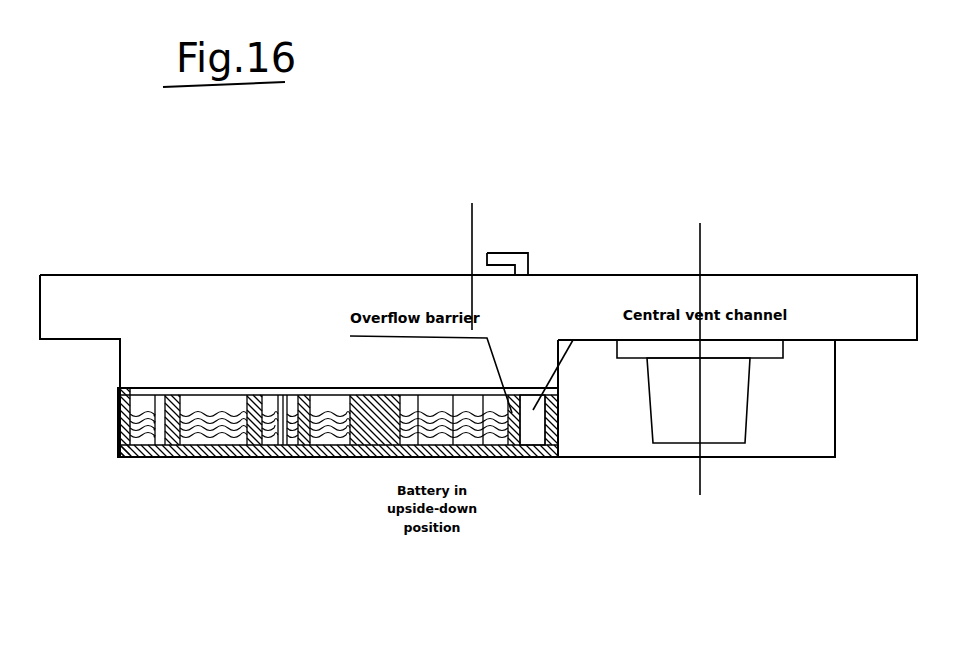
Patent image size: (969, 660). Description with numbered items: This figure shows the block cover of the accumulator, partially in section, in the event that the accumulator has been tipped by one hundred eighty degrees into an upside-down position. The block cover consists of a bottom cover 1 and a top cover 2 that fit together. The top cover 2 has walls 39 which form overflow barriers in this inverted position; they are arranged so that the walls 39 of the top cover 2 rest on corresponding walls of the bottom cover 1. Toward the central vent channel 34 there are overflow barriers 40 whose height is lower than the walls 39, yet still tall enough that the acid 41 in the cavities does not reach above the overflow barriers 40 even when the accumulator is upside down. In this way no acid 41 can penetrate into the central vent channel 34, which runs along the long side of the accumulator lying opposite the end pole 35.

The bottom cover 1 is at (190, 290).
The top cover 2 is at (250, 450).
The central vent channel 34 is at (532, 430).
The end pole 35 is at (717, 425).
The walls 39 is at (175, 425).
The overflow barriers 40 is at (515, 433).
The acid 41 is at (212, 430).